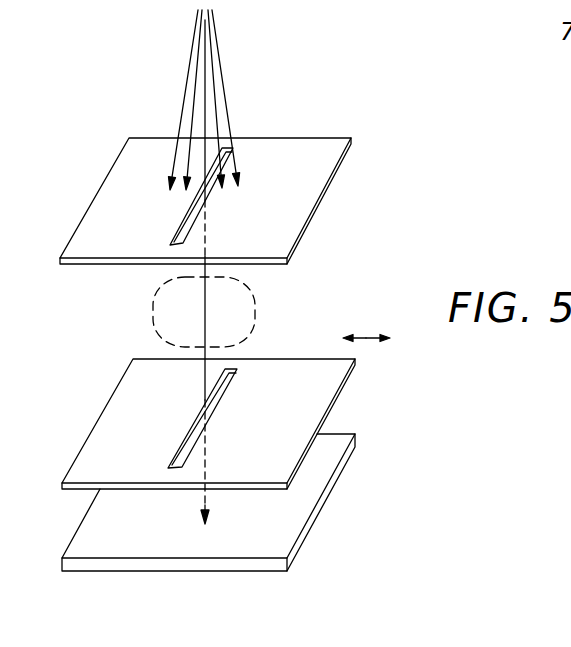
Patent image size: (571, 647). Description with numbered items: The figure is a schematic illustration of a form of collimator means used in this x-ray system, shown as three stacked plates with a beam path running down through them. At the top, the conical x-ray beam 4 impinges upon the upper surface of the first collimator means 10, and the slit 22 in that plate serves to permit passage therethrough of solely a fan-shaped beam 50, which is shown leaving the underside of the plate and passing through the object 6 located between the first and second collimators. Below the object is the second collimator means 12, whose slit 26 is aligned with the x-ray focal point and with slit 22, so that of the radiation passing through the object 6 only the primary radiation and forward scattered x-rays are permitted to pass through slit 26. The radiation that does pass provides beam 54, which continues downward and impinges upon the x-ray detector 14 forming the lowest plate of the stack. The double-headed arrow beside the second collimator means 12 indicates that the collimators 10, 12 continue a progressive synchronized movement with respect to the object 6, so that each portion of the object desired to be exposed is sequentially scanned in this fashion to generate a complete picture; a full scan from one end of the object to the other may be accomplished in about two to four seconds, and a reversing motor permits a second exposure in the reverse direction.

The incident light rays 4 is at (190, 70).
The first collimator means 10 is at (312, 140).
The slit 22 is at (188, 228).
The fan-shaped beam 50 is at (204, 275).
The object 6 is at (256, 307).
The second collimator means 12 is at (343, 386).
The slit 26 is at (187, 450).
The x-ray detector 14 is at (325, 495).
The beam 54 is at (199, 503).